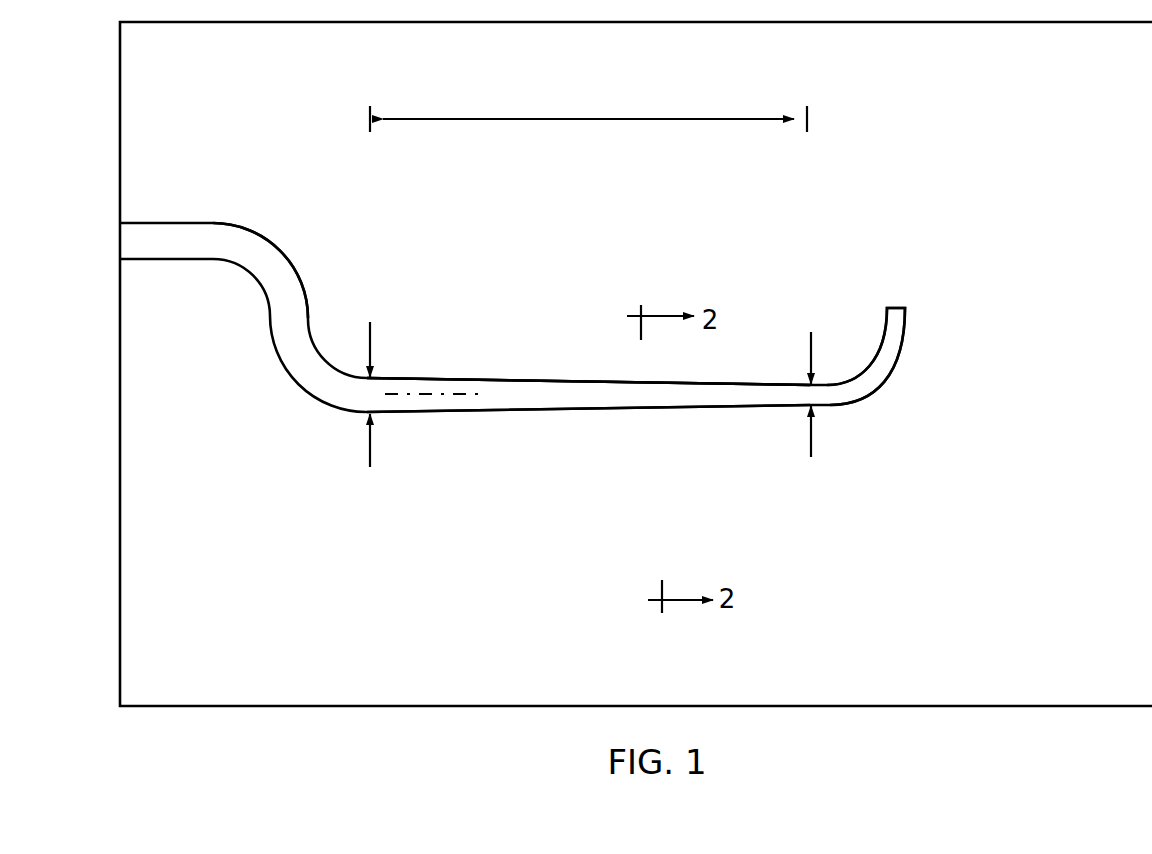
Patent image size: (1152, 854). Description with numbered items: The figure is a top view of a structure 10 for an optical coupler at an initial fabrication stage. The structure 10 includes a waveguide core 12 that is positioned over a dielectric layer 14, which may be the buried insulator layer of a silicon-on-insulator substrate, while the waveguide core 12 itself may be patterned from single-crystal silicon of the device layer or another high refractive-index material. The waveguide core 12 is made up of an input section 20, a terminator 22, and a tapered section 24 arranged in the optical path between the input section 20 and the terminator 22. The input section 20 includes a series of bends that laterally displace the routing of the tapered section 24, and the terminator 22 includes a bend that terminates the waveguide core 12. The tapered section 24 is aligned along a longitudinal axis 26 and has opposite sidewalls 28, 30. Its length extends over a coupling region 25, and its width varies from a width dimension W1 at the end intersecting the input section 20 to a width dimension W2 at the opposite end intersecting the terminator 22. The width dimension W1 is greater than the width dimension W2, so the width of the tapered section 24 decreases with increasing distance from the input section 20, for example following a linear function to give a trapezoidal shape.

The structure 10 is at (1052, 172).
The waveguide core 12 is at (366, 258).
The dielectric layer 14 is at (238, 625).
The input section 20 is at (247, 245).
The terminator 22 is at (873, 368).
The tapered section 24 is at (540, 392).
The coupling region 25 is at (588, 110).
The longitudinal axis 26 is at (447, 397).
The sidewall 28 is at (580, 410).
The sidewall 30 is at (600, 380).
The width dimension W1 is at (365, 412).
The width dimension W2 is at (820, 412).